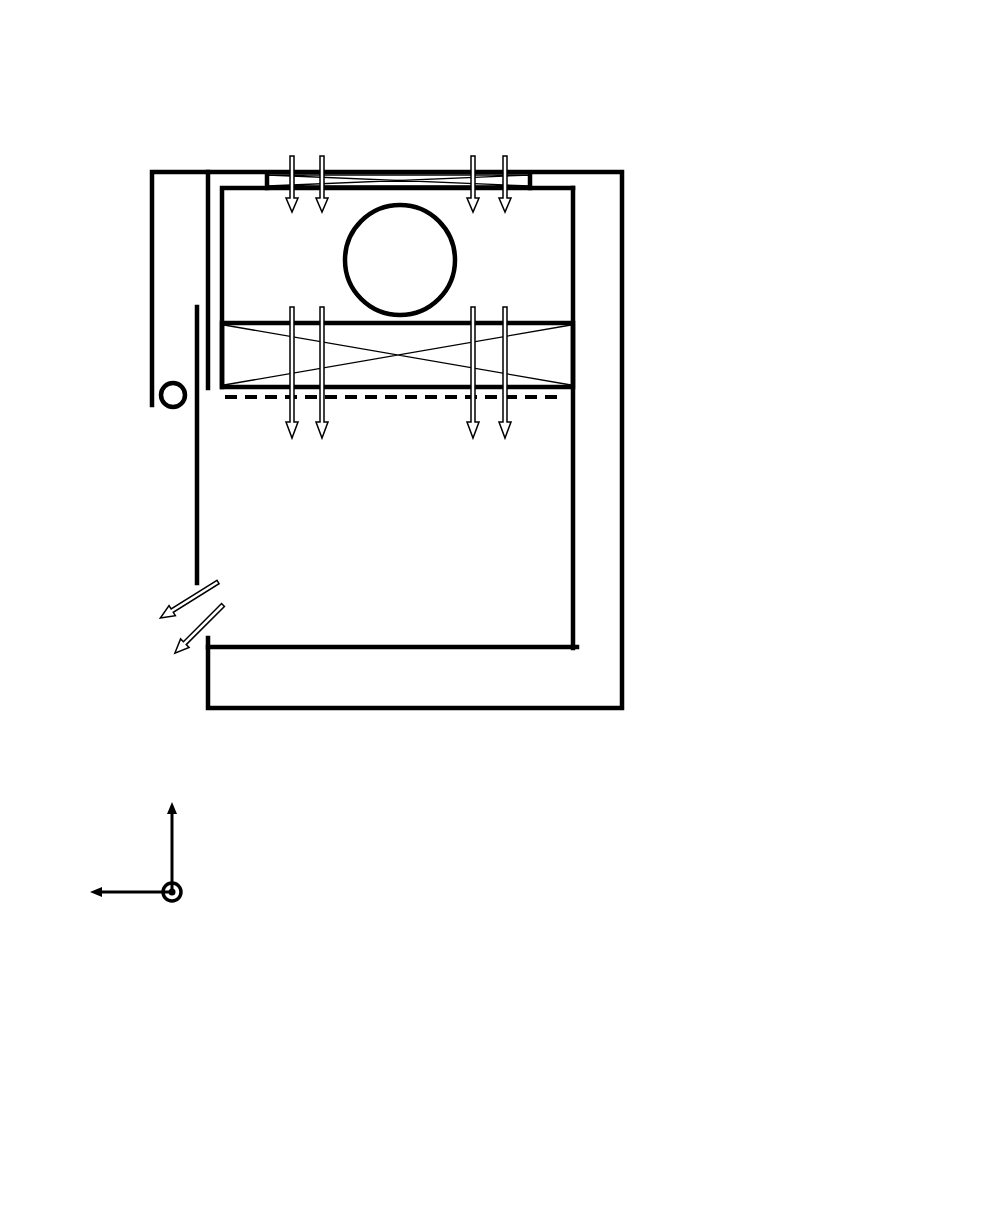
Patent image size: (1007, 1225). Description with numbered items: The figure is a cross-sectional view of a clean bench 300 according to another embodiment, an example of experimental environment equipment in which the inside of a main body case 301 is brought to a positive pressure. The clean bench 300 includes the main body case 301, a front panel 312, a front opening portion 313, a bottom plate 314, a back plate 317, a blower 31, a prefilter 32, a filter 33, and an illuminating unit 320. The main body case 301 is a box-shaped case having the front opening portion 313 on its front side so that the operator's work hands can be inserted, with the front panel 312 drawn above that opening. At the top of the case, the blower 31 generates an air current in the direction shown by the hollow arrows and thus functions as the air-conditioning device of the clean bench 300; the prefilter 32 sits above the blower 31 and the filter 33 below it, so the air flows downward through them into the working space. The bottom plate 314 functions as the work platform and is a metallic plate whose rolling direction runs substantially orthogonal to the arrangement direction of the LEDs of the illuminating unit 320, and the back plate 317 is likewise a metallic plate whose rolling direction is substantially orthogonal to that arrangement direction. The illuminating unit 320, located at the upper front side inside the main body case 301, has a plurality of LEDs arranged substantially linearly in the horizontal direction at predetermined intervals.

The clean bench 300 is at (607, 78).
The main body case 301 is at (643, 155).
The blower 31 is at (417, 257).
The prefilter 32 is at (378, 178).
The filter 33 is at (537, 348).
The front panel 312 is at (197, 500).
The front opening portion 313 is at (156, 632).
The bottom plate 314 is at (477, 648).
The back plate 317 is at (575, 515).
The illuminating unit 320 is at (162, 408).